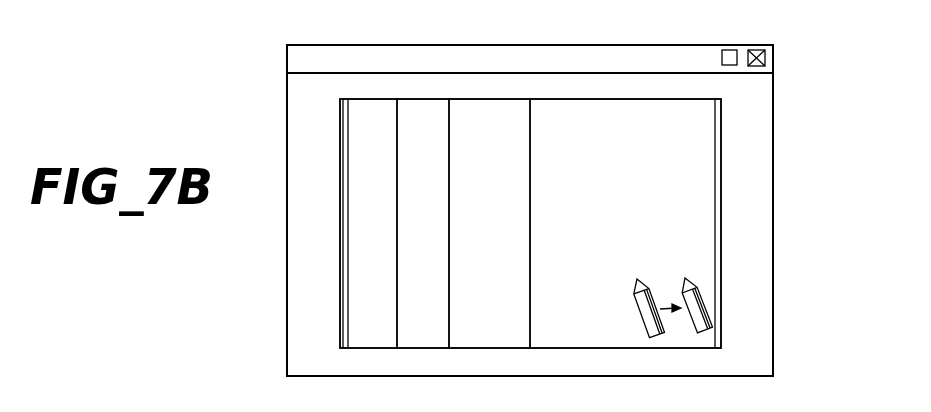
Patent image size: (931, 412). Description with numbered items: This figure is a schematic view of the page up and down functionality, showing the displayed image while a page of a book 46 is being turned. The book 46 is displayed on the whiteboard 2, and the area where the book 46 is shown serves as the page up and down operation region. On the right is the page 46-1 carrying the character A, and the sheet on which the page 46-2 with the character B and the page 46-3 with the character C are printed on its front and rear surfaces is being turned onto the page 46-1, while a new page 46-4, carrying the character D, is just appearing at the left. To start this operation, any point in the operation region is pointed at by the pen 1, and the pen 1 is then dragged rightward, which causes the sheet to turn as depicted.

The whiteboard 2 is at (287, 143).
The book 46 is at (722, 187).
The page 46-1 is at (608, 107).
The page 46-2 is at (497, 107).
The page 46-3 is at (417, 110).
The page 46-4 is at (360, 115).
The pen 1 is at (694, 297).